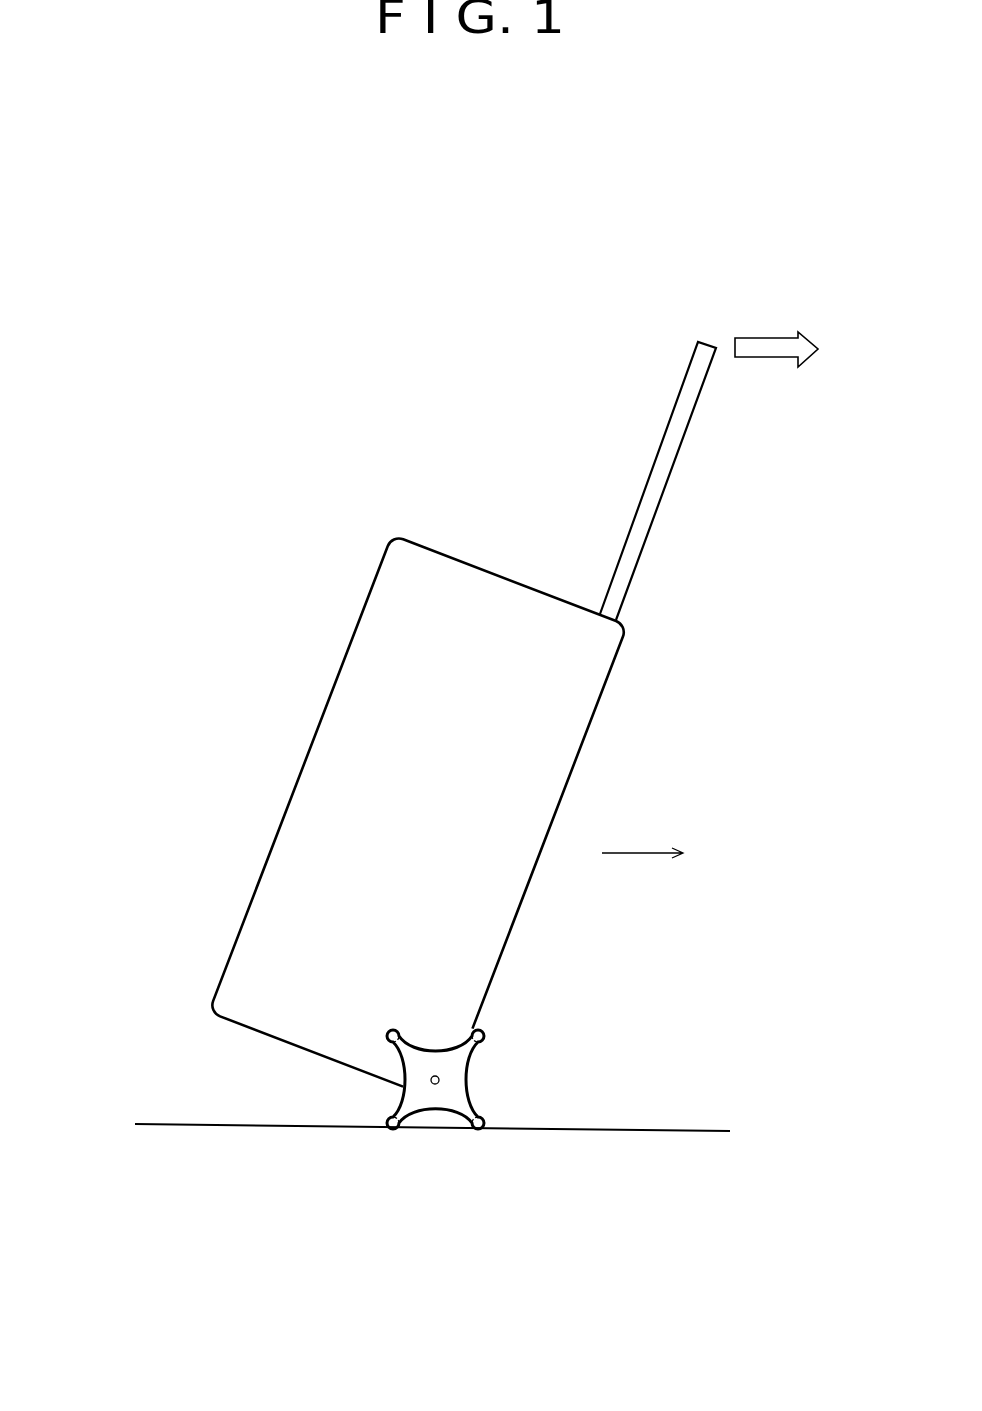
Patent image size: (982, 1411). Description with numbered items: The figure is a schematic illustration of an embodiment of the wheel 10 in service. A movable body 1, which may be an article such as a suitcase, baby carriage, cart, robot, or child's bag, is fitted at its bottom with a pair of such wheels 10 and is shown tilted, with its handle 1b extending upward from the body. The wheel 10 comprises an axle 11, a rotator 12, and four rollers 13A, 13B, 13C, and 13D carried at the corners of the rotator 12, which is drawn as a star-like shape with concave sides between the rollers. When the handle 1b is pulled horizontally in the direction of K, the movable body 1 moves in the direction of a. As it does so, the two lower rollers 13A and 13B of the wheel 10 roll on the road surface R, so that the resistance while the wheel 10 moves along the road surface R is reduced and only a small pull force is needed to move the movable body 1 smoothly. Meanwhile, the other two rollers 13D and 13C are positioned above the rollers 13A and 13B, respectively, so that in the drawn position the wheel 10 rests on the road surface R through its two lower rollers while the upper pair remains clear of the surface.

The movable body 1 is at (361, 650).
The handle 1b is at (668, 443).
The wheel 10 is at (372, 1133).
The axle 11 is at (442, 1080).
The rotator 12 is at (400, 1097).
The roller 13A is at (367, 1182).
The roller 13B is at (486, 1126).
The roller 13C is at (485, 1037).
The roller 13D is at (389, 1031).
The road surface R is at (708, 1130).
The direction of pull K is at (776, 328).
The direction of movement a is at (642, 836).